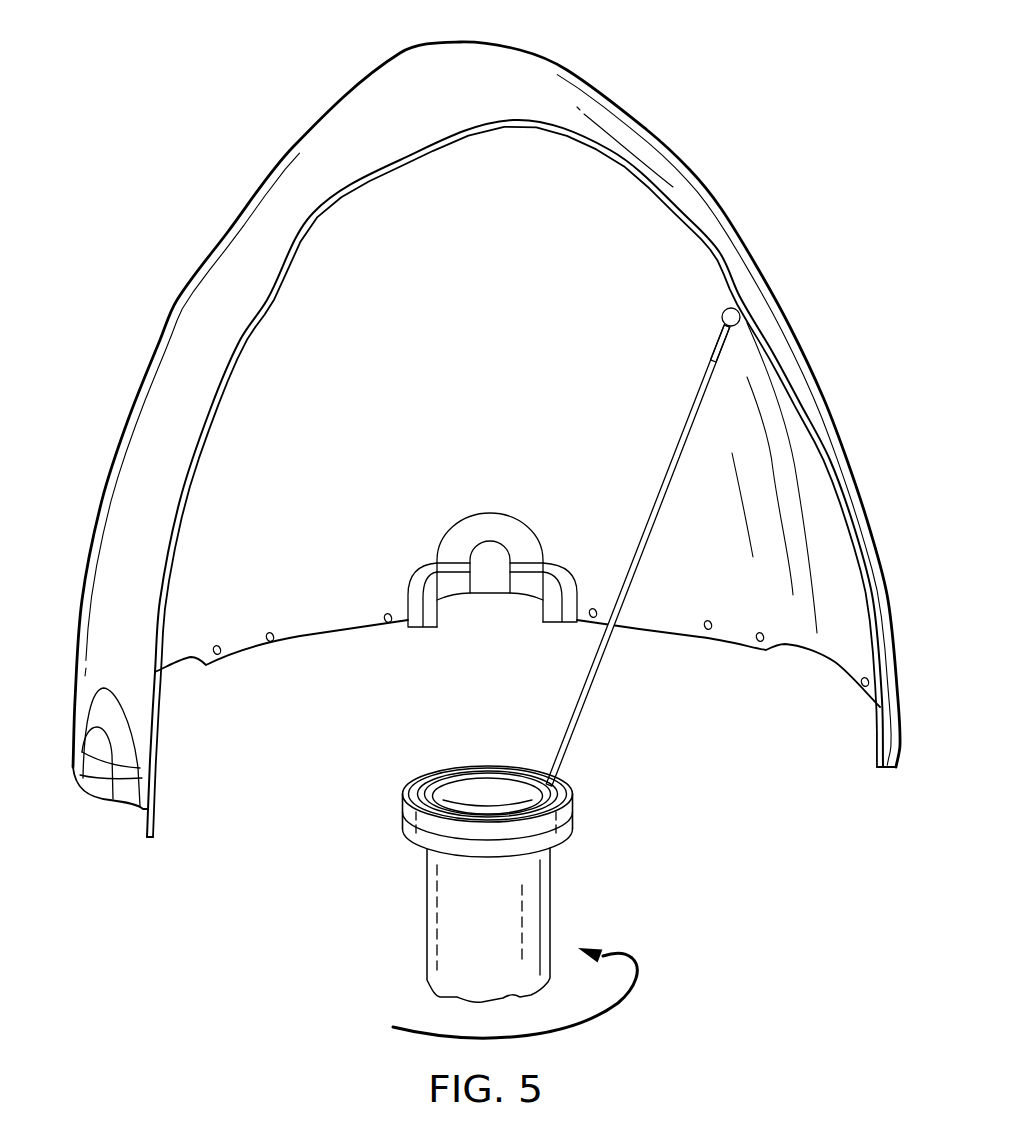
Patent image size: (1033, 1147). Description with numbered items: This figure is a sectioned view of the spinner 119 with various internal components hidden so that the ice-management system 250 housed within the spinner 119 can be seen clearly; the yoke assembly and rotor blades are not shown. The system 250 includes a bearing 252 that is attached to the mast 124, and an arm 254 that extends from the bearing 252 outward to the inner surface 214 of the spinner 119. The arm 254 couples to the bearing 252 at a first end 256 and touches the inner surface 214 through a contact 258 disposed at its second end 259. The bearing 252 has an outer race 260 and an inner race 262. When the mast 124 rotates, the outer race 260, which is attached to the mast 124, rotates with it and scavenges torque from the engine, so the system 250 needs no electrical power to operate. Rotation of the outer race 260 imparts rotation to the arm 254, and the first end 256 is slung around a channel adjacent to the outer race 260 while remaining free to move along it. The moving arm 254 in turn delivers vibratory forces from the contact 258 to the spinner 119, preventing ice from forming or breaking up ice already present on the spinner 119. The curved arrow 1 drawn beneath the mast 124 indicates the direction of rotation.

The ice-management system 250 is at (195, 60).
The spinner 119 is at (160, 337).
The inner surface 214 is at (496, 266).
The arm 254 is at (634, 663).
The first end 256 is at (569, 748).
The contact 258 is at (721, 316).
The second end 259 is at (711, 358).
The bearing 252 is at (375, 846).
The outer race 260 is at (438, 782).
The inner race 262 is at (491, 793).
The mast 124 is at (426, 918).
The rotation direction 1 is at (640, 990).